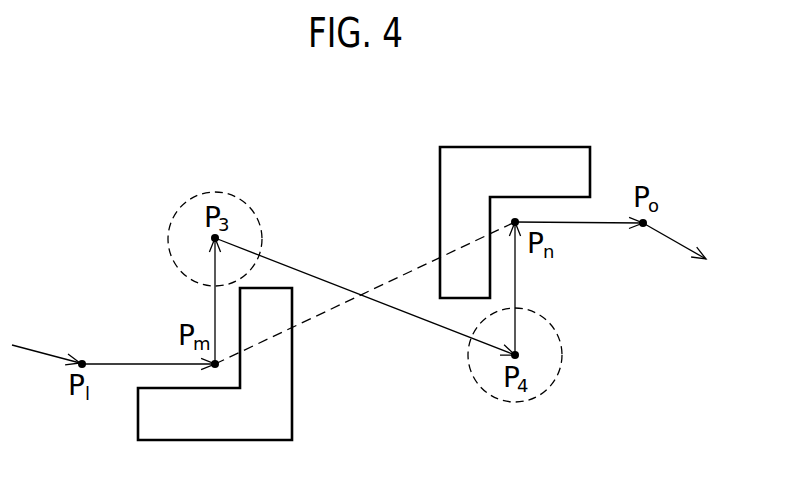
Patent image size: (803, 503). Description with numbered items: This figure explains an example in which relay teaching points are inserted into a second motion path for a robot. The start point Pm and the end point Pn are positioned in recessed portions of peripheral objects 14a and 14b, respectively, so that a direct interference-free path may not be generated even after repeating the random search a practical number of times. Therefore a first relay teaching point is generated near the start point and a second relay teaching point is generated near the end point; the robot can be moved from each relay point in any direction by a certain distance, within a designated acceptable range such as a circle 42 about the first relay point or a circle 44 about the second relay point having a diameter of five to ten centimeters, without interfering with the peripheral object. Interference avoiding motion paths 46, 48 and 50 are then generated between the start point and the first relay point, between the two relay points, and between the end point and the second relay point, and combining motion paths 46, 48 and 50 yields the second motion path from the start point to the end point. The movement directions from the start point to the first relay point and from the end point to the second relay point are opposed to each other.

The peripheral object 14a is at (292, 405).
The peripheral object 14b is at (440, 165).
The circle 42 is at (166, 213).
The circle 44 is at (562, 360).
The motion path 46 is at (215, 315).
The motion path 48 is at (305, 272).
The motion path 50 is at (516, 282).